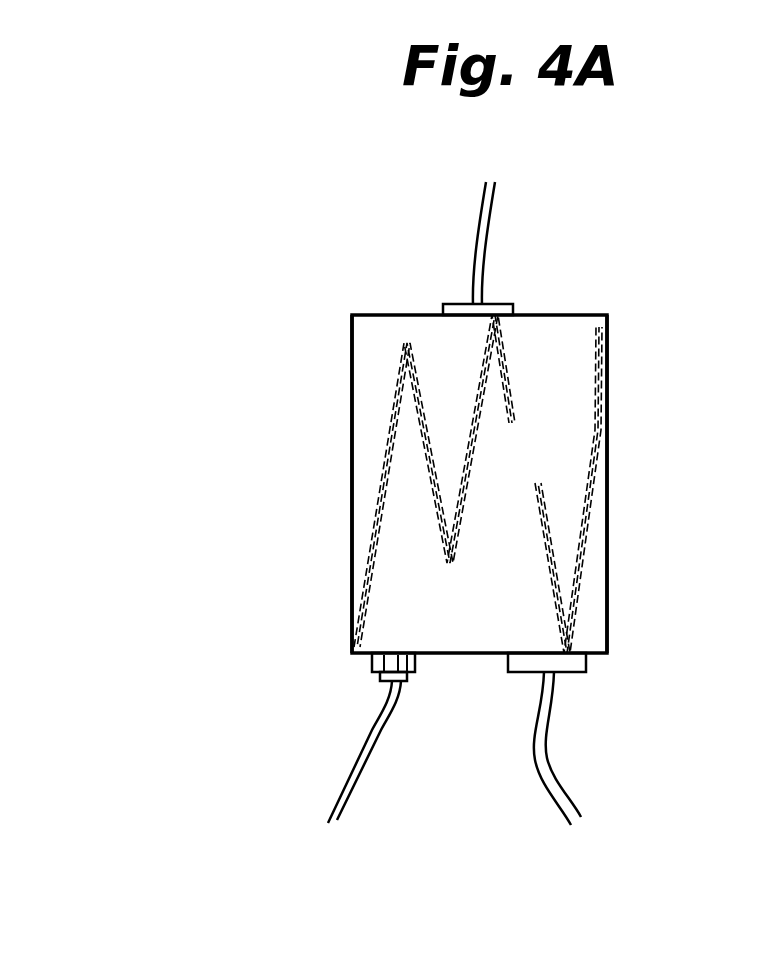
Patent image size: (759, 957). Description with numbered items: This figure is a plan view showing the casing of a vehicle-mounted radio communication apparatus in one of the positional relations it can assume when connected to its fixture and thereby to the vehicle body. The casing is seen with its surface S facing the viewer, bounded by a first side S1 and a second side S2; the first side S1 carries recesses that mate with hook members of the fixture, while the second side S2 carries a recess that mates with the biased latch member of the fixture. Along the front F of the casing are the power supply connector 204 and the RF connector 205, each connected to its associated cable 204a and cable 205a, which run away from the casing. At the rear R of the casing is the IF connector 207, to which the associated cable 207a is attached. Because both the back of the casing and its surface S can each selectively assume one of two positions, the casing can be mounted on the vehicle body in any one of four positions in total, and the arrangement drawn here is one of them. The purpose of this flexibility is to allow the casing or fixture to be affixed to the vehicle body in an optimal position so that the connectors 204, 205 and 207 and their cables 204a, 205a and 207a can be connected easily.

The rear R is at (567, 312).
The surface S is at (434, 478).
The first side S1 is at (614, 483).
The second side S2 is at (346, 357).
The front F is at (463, 668).
The IF connector 207 is at (497, 317).
The cable 207a is at (475, 214).
The RF connector 205 is at (393, 652).
The cable 205a is at (346, 776).
The power supply connector 204 is at (567, 655).
The cable 204a is at (567, 797).